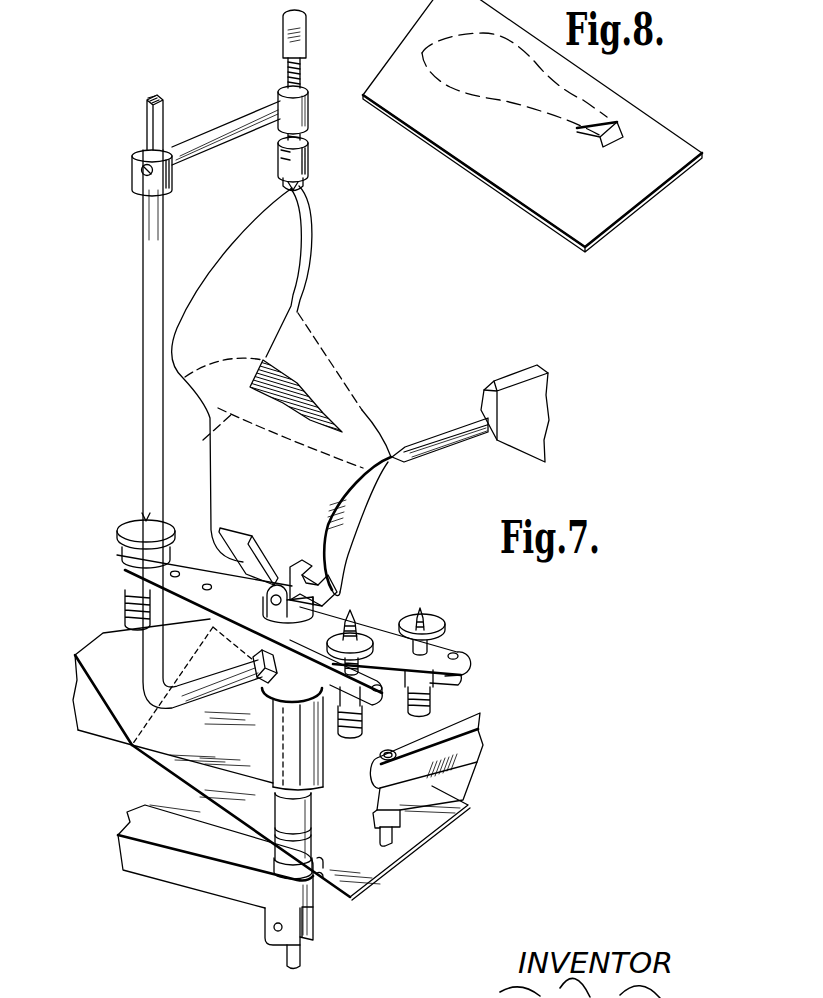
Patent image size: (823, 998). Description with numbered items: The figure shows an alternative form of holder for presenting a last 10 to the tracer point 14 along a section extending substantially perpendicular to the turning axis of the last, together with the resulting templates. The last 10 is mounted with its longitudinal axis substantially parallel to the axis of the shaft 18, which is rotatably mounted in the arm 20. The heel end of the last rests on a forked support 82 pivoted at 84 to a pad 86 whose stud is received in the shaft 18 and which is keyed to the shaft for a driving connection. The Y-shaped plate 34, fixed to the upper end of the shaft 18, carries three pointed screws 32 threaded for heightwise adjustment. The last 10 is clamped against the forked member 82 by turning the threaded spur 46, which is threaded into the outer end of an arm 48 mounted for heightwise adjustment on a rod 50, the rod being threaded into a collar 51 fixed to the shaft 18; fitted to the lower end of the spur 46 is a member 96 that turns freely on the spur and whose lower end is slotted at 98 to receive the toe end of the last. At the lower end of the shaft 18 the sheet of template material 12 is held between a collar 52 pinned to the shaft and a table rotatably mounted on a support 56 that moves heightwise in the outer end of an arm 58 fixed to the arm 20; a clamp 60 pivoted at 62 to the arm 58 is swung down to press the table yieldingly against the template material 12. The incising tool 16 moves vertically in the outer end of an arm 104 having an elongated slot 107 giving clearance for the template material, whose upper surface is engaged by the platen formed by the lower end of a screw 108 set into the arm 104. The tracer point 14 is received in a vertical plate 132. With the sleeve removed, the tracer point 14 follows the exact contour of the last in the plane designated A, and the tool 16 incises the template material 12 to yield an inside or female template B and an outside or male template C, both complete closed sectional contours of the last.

In FIG. 7, the last 10 is at (314, 212).
In FIG. 8, the sheet of template material 12 is at (613, 227).
In FIG. 7, the sheet of template material 12 is at (383, 858).
In FIG. 7, the tracer point 14 is at (433, 443).
In FIG. 7, the incising tool 16 is at (392, 836).
In FIG. 7, the shaft 18 is at (287, 740).
In FIG. 7, the arm 20 is at (88, 728).
In FIG. 7, the pointed screws 32 is at (137, 533).
In FIG. 7, the Y-shaped plate 34 is at (196, 570).
In FIG. 7, the spur member 46 is at (300, 72).
In FIG. 7, the arm 48 is at (215, 130).
In FIG. 7, the rod 50 is at (141, 300).
In FIG. 7, the collar 51 is at (283, 684).
In FIG. 7, the collar 52 is at (287, 811).
In FIG. 7, the support 56 is at (285, 867).
In FIG. 7, the arm 58 is at (140, 873).
In FIG. 7, the clamp 60 is at (300, 957).
In FIG. 7, the pivot 62 is at (276, 933).
In FIG. 7, the forked support 82 is at (238, 541).
In FIG. 7, the pivot 84 is at (270, 601).
In FIG. 7, the pad 86 is at (317, 604).
In FIG. 7, the member 96 is at (307, 154).
In FIG. 7, the slot 98 is at (282, 181).
In FIG. 7, the arm 104 is at (463, 781).
In FIG. 7, the elongated slot 107 is at (477, 762).
In FIG. 7, the screw 108 is at (397, 739).
In FIG. 7, the vertical plate 132 is at (520, 447).
In FIG. 7, the plane or cross-section of the last A is at (203, 437).
In FIG. 8, the inside or female template B is at (527, 188).
In FIG. 8, the outside or male template C is at (617, 117).